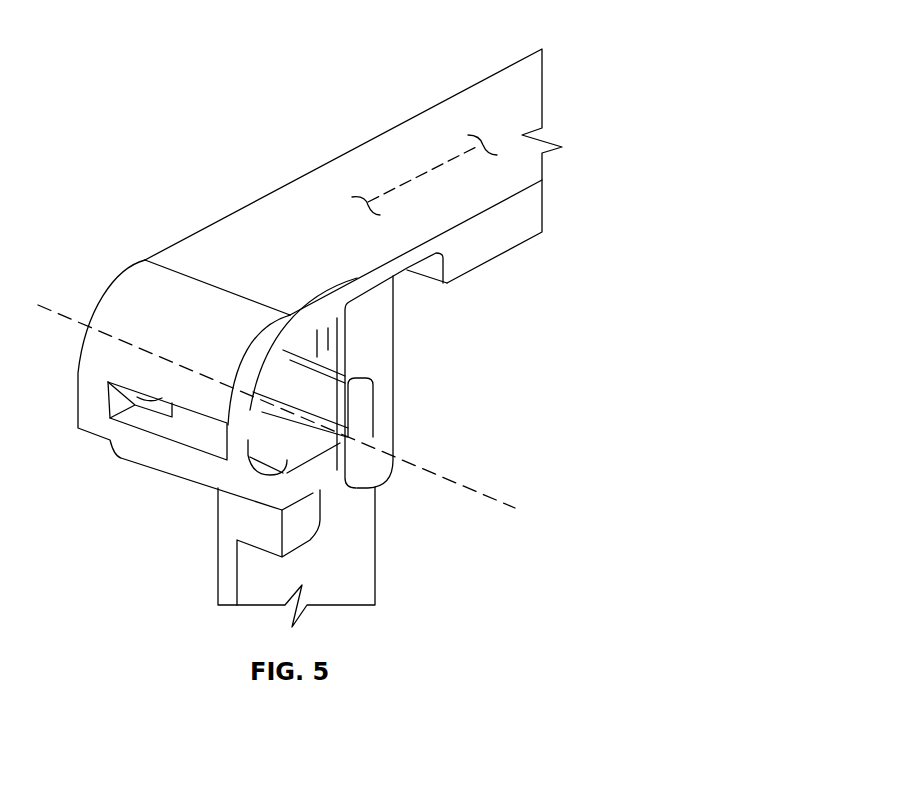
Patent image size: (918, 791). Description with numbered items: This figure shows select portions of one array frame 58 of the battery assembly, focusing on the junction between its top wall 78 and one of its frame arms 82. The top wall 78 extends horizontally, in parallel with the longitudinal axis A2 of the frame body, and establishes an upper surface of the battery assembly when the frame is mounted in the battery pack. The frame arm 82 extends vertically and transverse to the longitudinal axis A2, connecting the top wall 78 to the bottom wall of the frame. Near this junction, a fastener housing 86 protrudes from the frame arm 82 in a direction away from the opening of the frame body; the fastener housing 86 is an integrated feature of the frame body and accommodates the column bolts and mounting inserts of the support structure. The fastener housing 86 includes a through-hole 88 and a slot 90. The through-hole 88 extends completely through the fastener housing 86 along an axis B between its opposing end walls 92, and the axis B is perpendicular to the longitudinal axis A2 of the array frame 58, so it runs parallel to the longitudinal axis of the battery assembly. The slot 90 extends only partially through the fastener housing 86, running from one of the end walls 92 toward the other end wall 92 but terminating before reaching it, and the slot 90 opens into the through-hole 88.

The array frame 58 is at (311, 320).
The top wall 78 is at (518, 125).
The frame arm 82 is at (360, 553).
The fastener housing 86 is at (143, 293).
The through-hole 88 is at (315, 413).
The slot 90 is at (178, 432).
The end wall 92 is at (300, 313).
The longitudinal axis A2 is at (435, 170).
The axis B is at (467, 487).